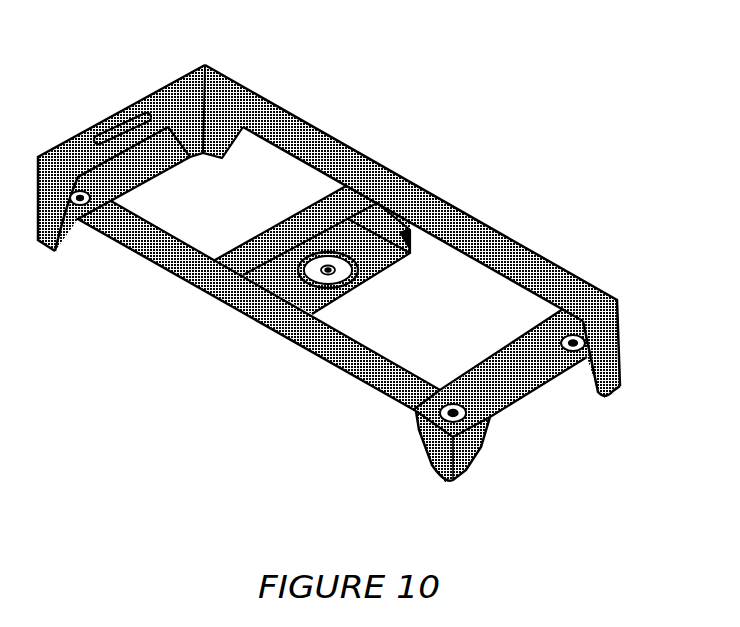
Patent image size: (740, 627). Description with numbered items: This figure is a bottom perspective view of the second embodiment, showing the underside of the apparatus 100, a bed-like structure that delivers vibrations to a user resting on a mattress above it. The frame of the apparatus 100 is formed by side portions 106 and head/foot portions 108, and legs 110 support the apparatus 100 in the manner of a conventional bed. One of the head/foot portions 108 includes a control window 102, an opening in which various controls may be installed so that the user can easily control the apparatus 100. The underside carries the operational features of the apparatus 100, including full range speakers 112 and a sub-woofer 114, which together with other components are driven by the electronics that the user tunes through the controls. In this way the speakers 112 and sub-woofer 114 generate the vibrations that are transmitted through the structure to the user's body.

The apparatus 100 is at (347, 256).
The control window 102 is at (112, 113).
The side portions 106 is at (338, 162).
The head/foot portions 108 is at (170, 102).
The legs 110 is at (483, 447).
The full range speakers 112 is at (83, 212).
The sub-woofer 114 is at (322, 280).